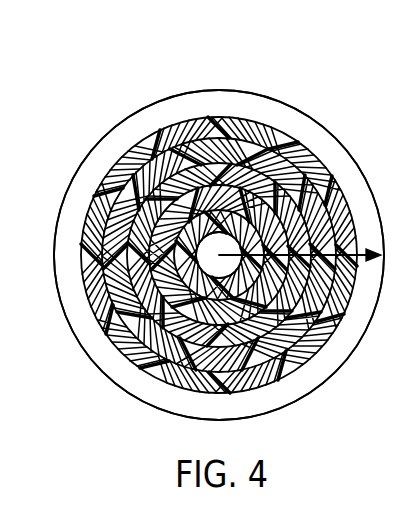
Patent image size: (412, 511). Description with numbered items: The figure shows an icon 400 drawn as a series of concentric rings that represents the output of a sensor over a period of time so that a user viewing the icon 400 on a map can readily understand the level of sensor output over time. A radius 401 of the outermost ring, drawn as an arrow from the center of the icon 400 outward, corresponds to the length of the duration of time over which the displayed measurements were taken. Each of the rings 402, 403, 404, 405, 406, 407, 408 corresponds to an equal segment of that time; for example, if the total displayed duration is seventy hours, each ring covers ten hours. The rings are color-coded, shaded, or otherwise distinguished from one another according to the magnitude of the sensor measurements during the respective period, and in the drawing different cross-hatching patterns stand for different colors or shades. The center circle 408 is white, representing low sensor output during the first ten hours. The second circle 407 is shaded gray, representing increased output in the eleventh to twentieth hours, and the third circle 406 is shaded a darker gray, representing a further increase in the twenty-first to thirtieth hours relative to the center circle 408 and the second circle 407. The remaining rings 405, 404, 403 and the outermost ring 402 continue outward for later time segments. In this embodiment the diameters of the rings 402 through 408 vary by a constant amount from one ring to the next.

The icon 400 is at (347, 73).
The radius 401 is at (299, 248).
The outermost ring 402 is at (97, 340).
The ring 403 is at (108, 322).
The ring 404 is at (127, 308).
The ring 405 is at (141, 286).
The third circle 406 is at (160, 266).
The second circle 407 is at (172, 252).
The center circle 408 is at (217, 248).